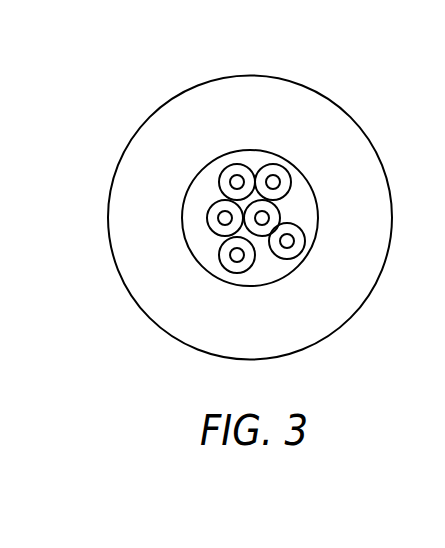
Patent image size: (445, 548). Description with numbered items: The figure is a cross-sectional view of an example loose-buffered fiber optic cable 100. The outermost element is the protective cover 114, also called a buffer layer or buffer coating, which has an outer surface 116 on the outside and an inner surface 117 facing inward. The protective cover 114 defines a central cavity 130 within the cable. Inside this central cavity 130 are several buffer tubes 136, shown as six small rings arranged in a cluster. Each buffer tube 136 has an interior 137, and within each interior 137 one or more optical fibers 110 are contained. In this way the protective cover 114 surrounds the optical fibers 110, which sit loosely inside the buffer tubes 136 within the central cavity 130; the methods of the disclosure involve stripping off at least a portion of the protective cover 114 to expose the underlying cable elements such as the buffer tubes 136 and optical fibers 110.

The fiber optic cable 100 is at (225, 205).
The optical fiber 110 is at (243, 200).
The protective cover 114 is at (217, 218).
The outer surface 116 is at (109, 240).
The inner surface 117 is at (192, 226).
The central cavity 130 is at (161, 218).
The buffer tube 136 is at (277, 163).
The interior 137 is at (268, 213).